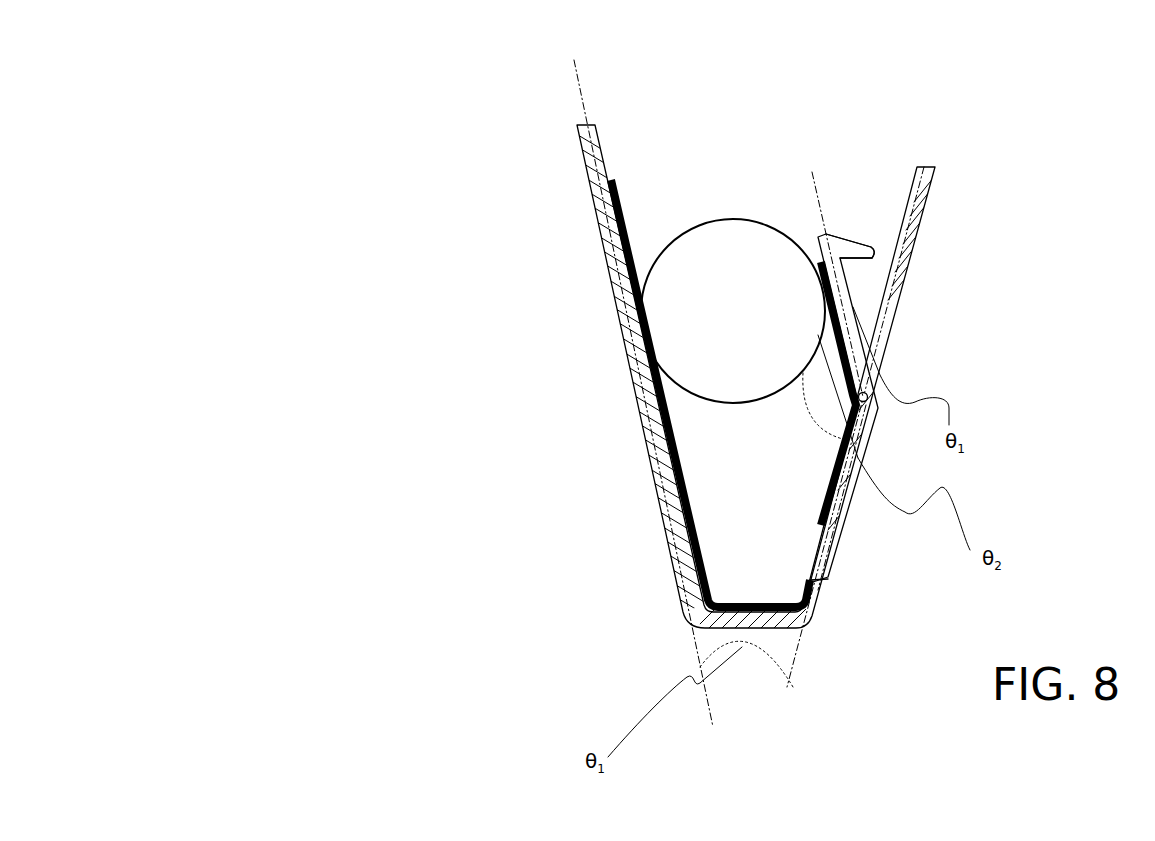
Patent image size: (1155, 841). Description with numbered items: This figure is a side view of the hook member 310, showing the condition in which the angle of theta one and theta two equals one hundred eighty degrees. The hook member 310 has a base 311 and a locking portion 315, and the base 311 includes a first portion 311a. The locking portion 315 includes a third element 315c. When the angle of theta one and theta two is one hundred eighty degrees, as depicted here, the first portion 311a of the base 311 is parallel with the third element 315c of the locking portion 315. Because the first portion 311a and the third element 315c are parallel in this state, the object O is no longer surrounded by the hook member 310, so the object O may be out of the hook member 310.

The hook member 310 is at (80, 47).
The base 311 is at (567, 98).
The first portion 311a is at (638, 397).
The object O is at (693, 227).
The locking portion 315 is at (837, 195).
The third element 315c is at (830, 287).